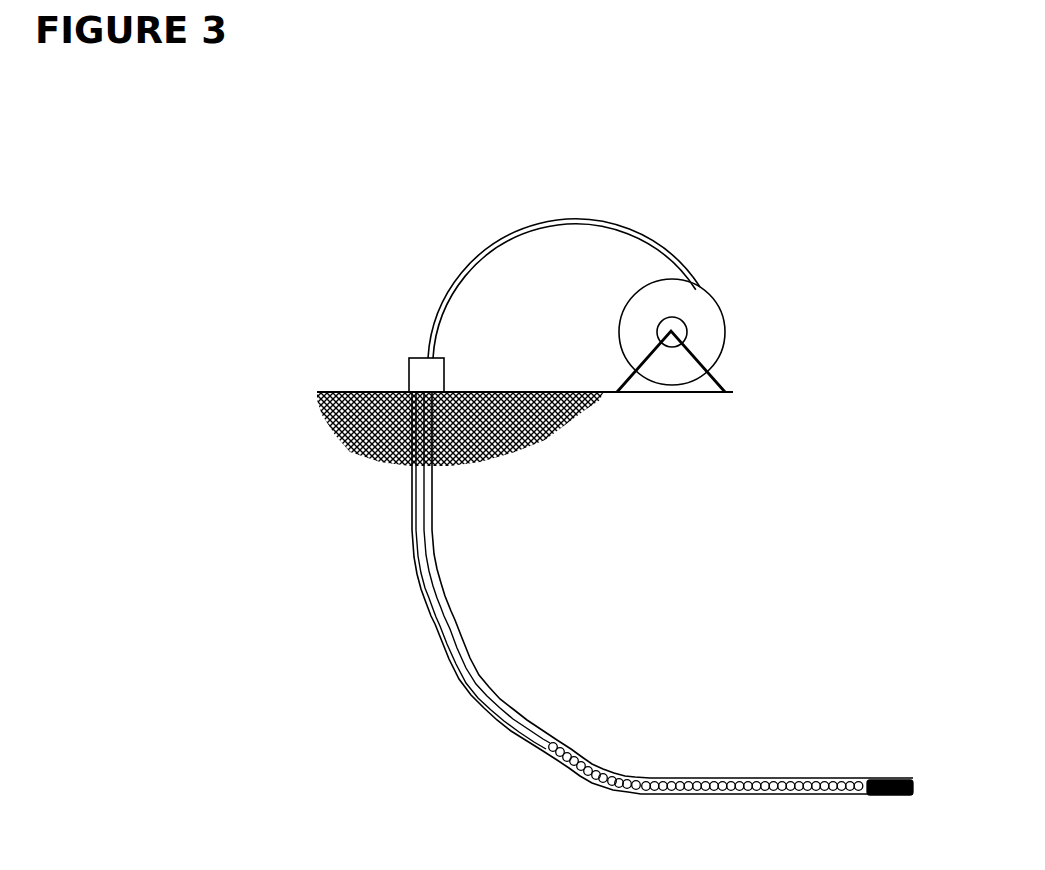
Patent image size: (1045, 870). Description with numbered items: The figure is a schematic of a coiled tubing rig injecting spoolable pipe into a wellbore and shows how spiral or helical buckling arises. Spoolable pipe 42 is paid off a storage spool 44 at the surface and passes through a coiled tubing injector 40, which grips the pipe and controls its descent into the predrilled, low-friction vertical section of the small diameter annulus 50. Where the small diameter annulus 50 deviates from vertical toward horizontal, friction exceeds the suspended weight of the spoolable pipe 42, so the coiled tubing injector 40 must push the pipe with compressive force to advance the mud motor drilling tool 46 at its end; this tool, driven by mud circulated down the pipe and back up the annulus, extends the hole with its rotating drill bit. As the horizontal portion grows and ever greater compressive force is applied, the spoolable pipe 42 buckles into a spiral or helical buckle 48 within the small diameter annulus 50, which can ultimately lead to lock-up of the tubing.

The coiled tubing injector 40 is at (405, 353).
The spoolable pipe 42 is at (643, 225).
The storage spool 44 is at (723, 305).
The mud motor drilling tool 46 is at (883, 768).
The spiral or helical buckle 48 is at (593, 792).
The small diameter annulus 50 is at (457, 685).